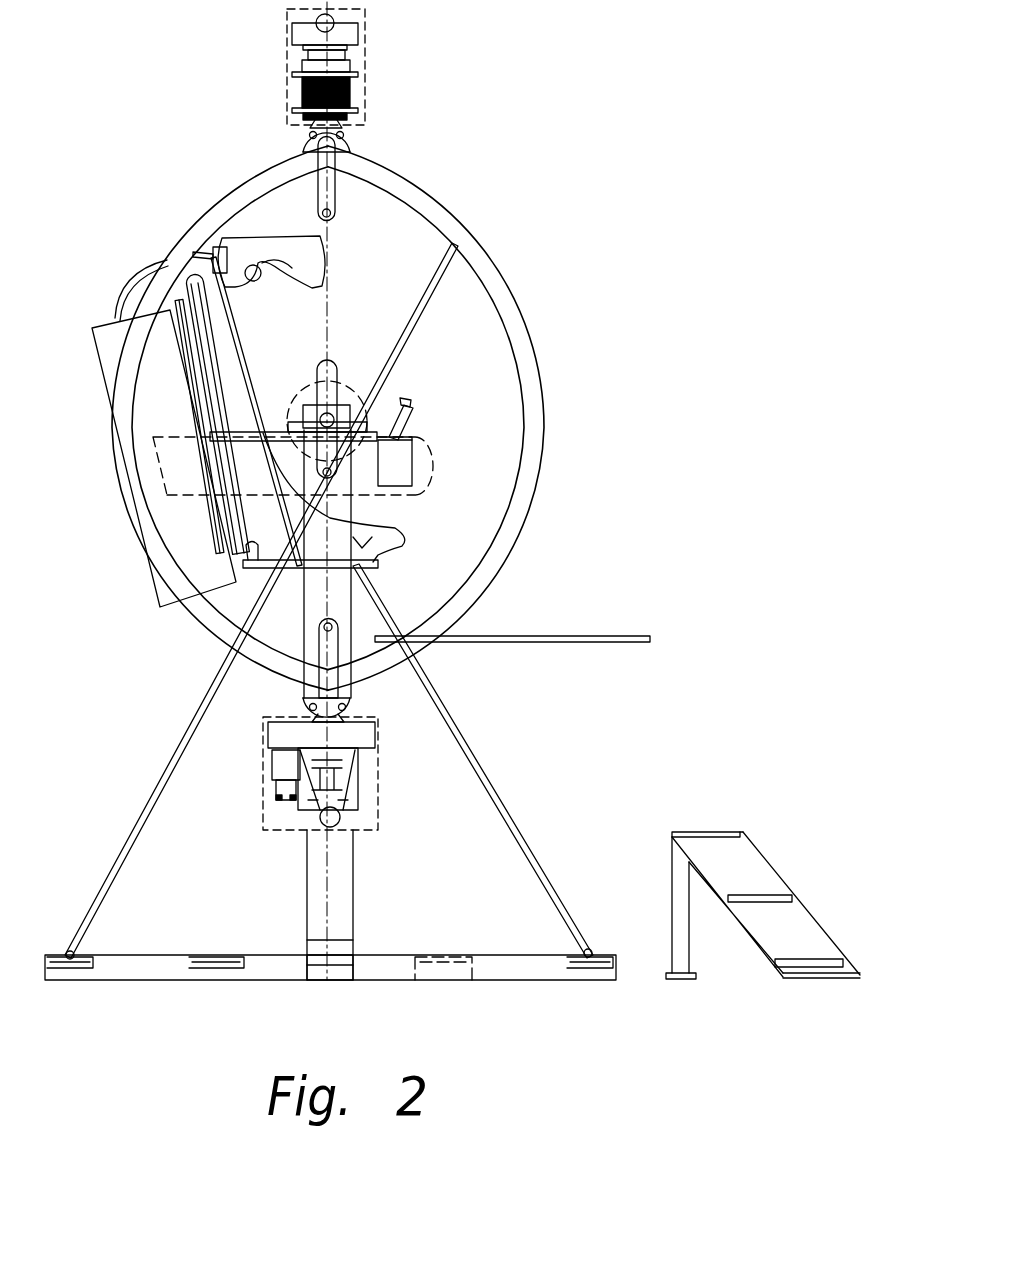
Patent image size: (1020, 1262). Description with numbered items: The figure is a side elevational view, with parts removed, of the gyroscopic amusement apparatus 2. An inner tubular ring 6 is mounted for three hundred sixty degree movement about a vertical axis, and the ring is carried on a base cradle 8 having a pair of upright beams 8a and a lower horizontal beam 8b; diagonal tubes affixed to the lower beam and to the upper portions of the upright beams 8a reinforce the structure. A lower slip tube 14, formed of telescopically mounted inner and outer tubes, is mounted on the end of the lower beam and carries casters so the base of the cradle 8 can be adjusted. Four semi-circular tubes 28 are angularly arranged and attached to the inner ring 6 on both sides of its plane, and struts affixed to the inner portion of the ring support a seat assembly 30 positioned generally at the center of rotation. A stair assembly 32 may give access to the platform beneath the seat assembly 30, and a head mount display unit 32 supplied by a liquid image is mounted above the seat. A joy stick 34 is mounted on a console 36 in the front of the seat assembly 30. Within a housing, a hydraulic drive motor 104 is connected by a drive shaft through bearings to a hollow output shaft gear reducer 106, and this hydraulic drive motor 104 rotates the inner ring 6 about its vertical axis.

The gyroscopic amusement apparatus 2 is at (497, 208).
The inner tubular ring 6 is at (335, 188).
The base cradle 8 is at (513, 800).
The upright beam 8a is at (343, 900).
The lower horizontal beam 8b is at (323, 977).
The lower slip tube 14 is at (523, 975).
The semi-circular tube 28 is at (517, 337).
The seat assembly 30 is at (270, 528).
The stair assembly / head mount display unit 32 is at (323, 263).
The joy stick 34 is at (406, 397).
The console 36 is at (405, 462).
The hydraulic drive motor 104 is at (287, 800).
The hollow output shaft gear reducer 106 is at (275, 763).